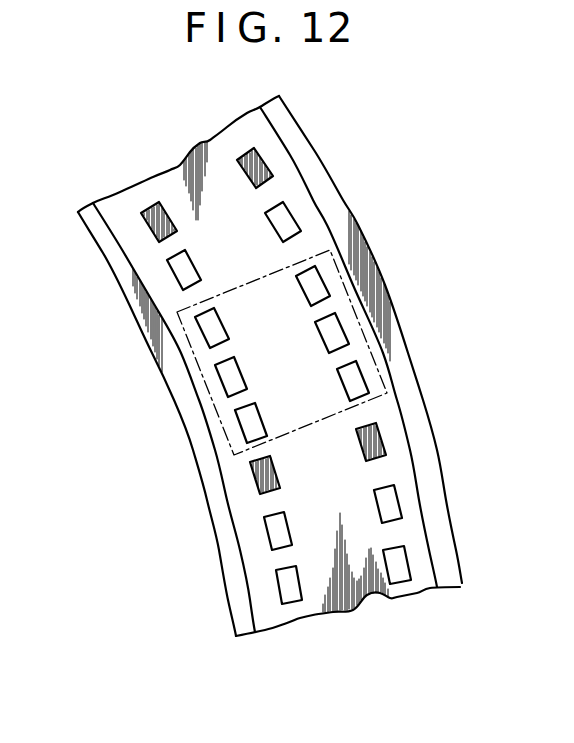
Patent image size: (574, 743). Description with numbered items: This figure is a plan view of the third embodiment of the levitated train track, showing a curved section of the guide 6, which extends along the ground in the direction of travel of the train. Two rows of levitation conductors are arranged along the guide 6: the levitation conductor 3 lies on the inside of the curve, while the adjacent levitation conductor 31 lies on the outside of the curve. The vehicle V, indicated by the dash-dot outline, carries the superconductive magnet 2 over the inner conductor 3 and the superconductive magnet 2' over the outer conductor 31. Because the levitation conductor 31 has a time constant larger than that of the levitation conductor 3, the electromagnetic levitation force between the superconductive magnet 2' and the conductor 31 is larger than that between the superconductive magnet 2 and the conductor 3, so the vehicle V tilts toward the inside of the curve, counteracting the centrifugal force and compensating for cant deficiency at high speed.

The guide 6 is at (203, 141).
The vehicle V is at (237, 283).
The superconductive magnet 2 is at (240, 377).
The superconductive magnet 2' is at (327, 347).
The levitation conductor 3 is at (288, 603).
The levitation conductor 31 is at (402, 577).